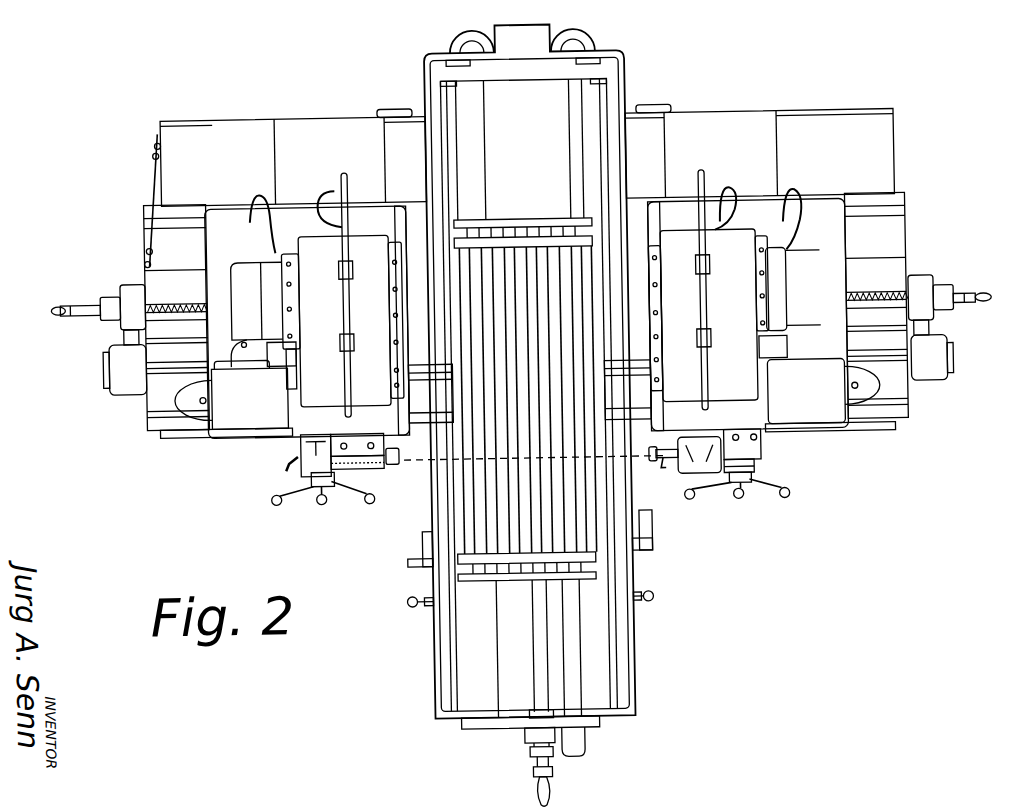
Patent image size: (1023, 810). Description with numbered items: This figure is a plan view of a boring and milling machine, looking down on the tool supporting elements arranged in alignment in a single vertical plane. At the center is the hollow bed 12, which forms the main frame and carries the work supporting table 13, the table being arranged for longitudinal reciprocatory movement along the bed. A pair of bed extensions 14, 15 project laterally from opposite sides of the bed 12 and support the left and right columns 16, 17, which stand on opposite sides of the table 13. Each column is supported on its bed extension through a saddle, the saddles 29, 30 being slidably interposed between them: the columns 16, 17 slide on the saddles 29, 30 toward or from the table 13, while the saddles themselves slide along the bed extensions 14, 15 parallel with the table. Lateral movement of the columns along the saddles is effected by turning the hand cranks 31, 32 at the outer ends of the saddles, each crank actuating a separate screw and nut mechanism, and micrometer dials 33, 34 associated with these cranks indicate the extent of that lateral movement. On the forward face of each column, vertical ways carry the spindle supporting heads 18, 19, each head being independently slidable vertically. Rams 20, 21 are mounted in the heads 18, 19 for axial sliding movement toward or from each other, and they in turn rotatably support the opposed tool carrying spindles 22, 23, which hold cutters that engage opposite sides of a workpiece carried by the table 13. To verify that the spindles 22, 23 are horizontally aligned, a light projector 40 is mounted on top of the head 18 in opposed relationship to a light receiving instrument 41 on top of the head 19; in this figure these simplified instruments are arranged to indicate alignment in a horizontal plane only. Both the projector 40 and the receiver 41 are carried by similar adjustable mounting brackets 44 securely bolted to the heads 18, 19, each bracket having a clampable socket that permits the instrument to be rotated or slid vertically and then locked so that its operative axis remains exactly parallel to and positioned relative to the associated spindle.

The hollow bed 12 is at (462, 637).
The work supporting table 13 is at (426, 520).
The left bed extension 14 is at (191, 137).
The right bed extension 15 is at (877, 154).
The left column 16 is at (236, 211).
The right column 17 is at (816, 220).
The left spindle supporting head 18 is at (325, 264).
The right spindle supporting head 19 is at (736, 254).
The left ram 20 is at (408, 415).
The right ram 21 is at (637, 418).
The left tool carrying spindle 22 is at (452, 394).
The right tool carrying spindle 23 is at (600, 392).
The left saddle 29 is at (171, 230).
The right saddle 30 is at (892, 235).
The left column hand crank 31 is at (64, 305).
The right column hand crank 32 is at (988, 312).
The left micrometer dial 33 is at (117, 286).
The right micrometer dial 34 is at (942, 290).
The light projector 40 is at (390, 474).
The light receiving instrument 41 is at (671, 466).
The adjustable mounting bracket 44 is at (349, 439).